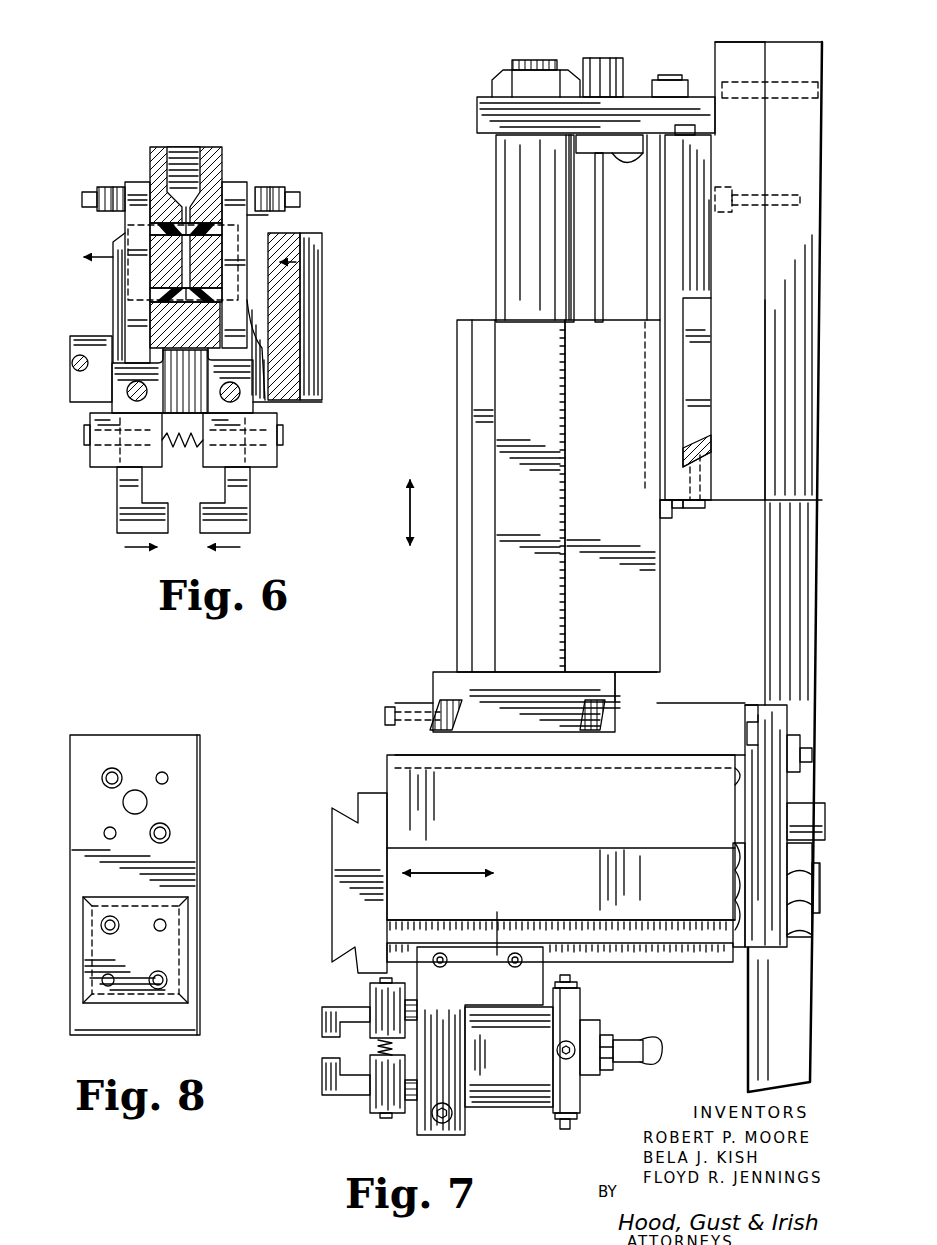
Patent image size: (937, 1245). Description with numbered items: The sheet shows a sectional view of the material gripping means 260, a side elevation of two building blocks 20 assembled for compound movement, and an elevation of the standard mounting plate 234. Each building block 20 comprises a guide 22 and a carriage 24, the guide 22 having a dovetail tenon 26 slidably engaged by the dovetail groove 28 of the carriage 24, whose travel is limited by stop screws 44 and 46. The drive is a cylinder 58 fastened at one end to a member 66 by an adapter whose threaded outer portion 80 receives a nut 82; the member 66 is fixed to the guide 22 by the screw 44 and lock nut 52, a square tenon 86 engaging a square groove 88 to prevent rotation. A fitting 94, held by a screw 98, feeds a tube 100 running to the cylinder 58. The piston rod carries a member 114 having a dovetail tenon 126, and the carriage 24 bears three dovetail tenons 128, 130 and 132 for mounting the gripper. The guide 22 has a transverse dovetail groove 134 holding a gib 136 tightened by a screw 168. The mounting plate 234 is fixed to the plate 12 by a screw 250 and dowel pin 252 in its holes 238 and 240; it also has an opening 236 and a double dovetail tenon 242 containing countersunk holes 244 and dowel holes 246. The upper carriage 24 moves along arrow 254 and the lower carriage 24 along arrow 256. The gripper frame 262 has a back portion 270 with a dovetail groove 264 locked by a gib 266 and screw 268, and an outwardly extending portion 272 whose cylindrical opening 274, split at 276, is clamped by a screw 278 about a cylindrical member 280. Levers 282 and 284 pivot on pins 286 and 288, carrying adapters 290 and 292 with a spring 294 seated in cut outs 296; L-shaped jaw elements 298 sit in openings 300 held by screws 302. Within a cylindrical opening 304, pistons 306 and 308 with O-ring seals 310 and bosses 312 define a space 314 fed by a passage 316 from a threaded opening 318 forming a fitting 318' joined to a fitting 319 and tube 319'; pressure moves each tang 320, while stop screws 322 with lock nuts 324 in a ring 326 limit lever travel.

In FIG. 7, the plate 12 is at (773, 484).
In FIG. 7, the building block 20 is at (488, 313).
In FIG. 7, the guide 22 is at (696, 262).
In FIG. 7, the carriage 24 is at (594, 490).
In FIG. 7, the dovetail tenon 26 is at (738, 770).
In FIG. 7, the dovetail groove 28 is at (665, 782).
In FIG. 7, the stop screw 44 is at (672, 80).
In FIG. 7, the stop screw 46 is at (668, 519).
In FIG. 7, the lock nut 52 is at (686, 92).
In FIG. 7, the cylinder 58 is at (522, 289).
In FIG. 7, the member 66 is at (490, 120).
In FIG. 7, the outer portion 80 is at (814, 914).
In FIG. 7, the nut 82 is at (500, 84).
In FIG. 7, the square tenon 86 is at (695, 130).
In FIG. 7, the square groove 88 is at (697, 140).
In FIG. 7, the fitting 94 is at (626, 72).
In FIG. 7, the screw 98 is at (625, 162).
In FIG. 7, the tube 100 is at (601, 208).
In FIG. 7, the member 114 is at (466, 688).
In FIG. 7, the dovetail tenon 126 is at (620, 703).
In FIG. 7, the dovetail tenon 128 is at (543, 887).
In FIG. 7, the dovetail tenon 130 is at (463, 460).
In FIG. 7, the dovetail tenon 132 is at (510, 524).
In FIG. 7, the dovetail groove 134 is at (690, 306).
In FIG. 7, the gib 136 is at (707, 450).
In FIG. 7, the screw 168 is at (385, 712).
In FIG. 8, the plate 234 is at (93, 800).
In FIG. 7, the plate 234 is at (727, 316).
In FIG. 8, the opening 236 is at (142, 800).
In FIG. 8, the counter sunk holes 238 is at (122, 772).
In FIG. 8, the holes 240 is at (168, 777).
In FIG. 8, the double dovetail tenon 242 is at (195, 950).
In FIG. 7, the double dovetail tenon 242 is at (700, 392).
In FIG. 8, the counter sunk holes 244 is at (103, 923).
In FIG. 8, the holes 246 is at (166, 925).
In FIG. 7, the screw 250 is at (750, 205).
In FIG. 7, the dowel pin 252 is at (751, 80).
In FIG. 7, the arrow 254 is at (411, 526).
In FIG. 7, the arrow 256 is at (440, 875).
In FIG. 6, the material gripping means 260 is at (333, 432).
In FIG. 7, the material gripping means 260 is at (524, 1118).
In FIG. 6, the frame 262 is at (273, 378).
In FIG. 7, the frame 262 is at (426, 1012).
In FIG. 6, the dovetail groove 264 is at (308, 342).
In FIG. 6, the gib 266 is at (313, 320).
In FIG. 6, the screw 268 is at (318, 270).
In FIG. 7, the screw 268 is at (509, 966).
In FIG. 6, the back portion 270 is at (293, 323).
In FIG. 7, the back portion 270 is at (498, 923).
In FIG. 6, the outwardly extending portion 272 is at (78, 392).
In FIG. 7, the outwardly extending portion 272 is at (437, 1070).
In FIG. 6, the cylindrical opening 274 is at (118, 347).
In FIG. 6, the split 276 is at (70, 352).
In FIG. 6, the screw 278 is at (72, 363).
In FIG. 7, the screw 278 is at (452, 1116).
In FIG. 6, the cylindrical member 280 is at (112, 310).
In FIG. 7, the cylindrical member 280 is at (492, 1059).
In FIG. 6, the lever 282 is at (240, 200).
In FIG. 6, the lever 284 is at (140, 182).
In FIG. 6, the pin 286 is at (231, 384).
In FIG. 6, the pin 288 is at (108, 414).
In FIG. 6, the adapter 290 is at (263, 470).
In FIG. 7, the adapter 290 is at (368, 1100).
In FIG. 6, the adapter 292 is at (103, 472).
In FIG. 7, the adapter 292 is at (362, 996).
In FIG. 6, the spring 294 is at (175, 455).
In FIG. 7, the spring 294 is at (376, 1045).
In FIG. 6, the cut outs 296 is at (158, 468).
In FIG. 6, the jaw elements 298 is at (133, 520).
In FIG. 7, the jaw elements 298 is at (325, 1027).
In FIG. 6, the openings 300 is at (115, 475).
In FIG. 6, the screws 302 is at (88, 445).
In FIG. 7, the screws 302 is at (380, 972).
In FIG. 6, the cylindrical opening 304 is at (262, 228).
In FIG. 6, the piston 306 is at (228, 193).
In FIG. 6, the piston 308 is at (172, 262).
In FIG. 6, the O-ring seal 310 is at (158, 305).
In FIG. 6, the boss 312 is at (183, 242).
In FIG. 6, the space 314 is at (213, 188).
In FIG. 6, the passage 316 is at (188, 190).
In FIG. 6, the threaded opening 318 is at (172, 158).
In FIG. 6, the fitting 318' is at (248, 163).
In FIG. 7, the fitting 318' is at (609, 1036).
In FIG. 7, the fitting 319 is at (626, 1065).
In FIG. 7, the tube 319' is at (664, 1035).
In FIG. 6, the tang 320 is at (152, 270).
In FIG. 6, the stop screw 322 is at (113, 187).
In FIG. 7, the stop screw 322 is at (571, 980).
In FIG. 6, the lock nut 324 is at (82, 195).
In FIG. 7, the lock nut 324 is at (578, 985).
In FIG. 6, the ring 326 is at (108, 186).
In FIG. 7, the ring 326 is at (558, 1036).